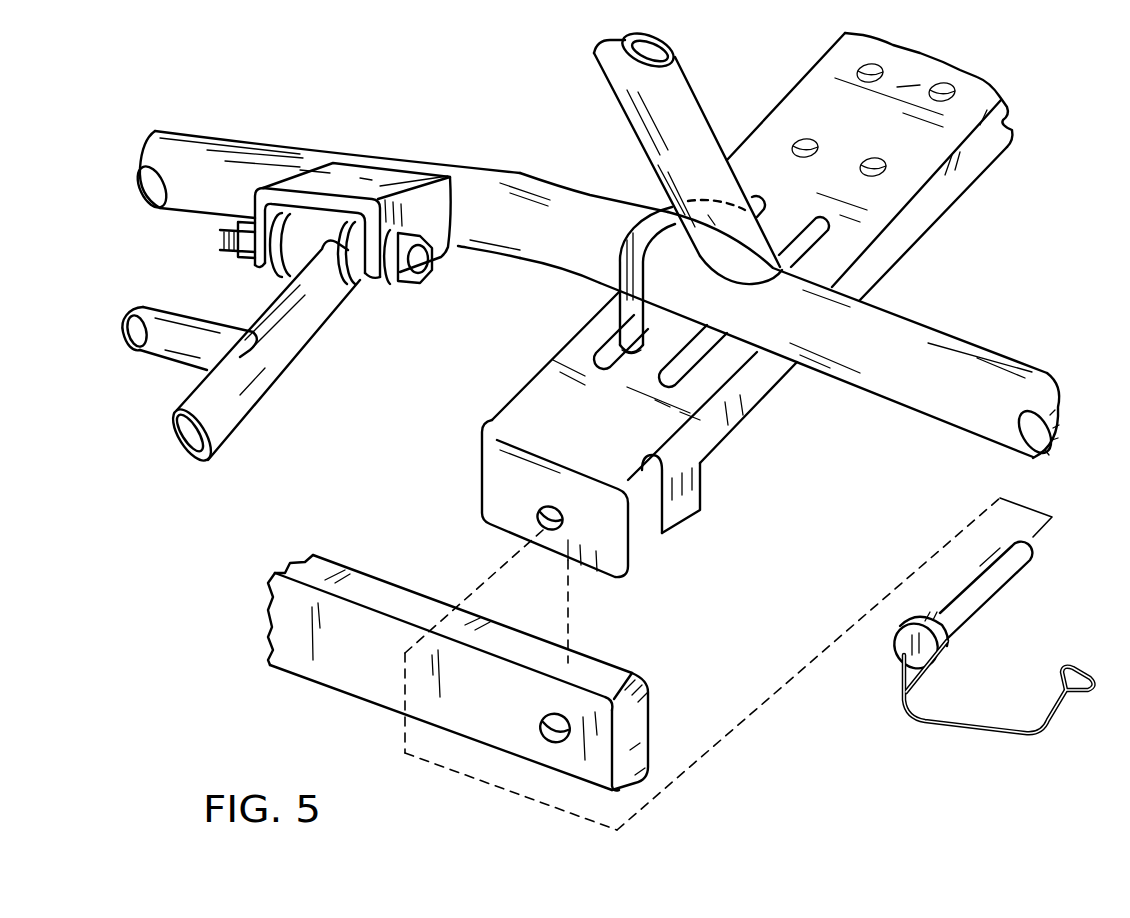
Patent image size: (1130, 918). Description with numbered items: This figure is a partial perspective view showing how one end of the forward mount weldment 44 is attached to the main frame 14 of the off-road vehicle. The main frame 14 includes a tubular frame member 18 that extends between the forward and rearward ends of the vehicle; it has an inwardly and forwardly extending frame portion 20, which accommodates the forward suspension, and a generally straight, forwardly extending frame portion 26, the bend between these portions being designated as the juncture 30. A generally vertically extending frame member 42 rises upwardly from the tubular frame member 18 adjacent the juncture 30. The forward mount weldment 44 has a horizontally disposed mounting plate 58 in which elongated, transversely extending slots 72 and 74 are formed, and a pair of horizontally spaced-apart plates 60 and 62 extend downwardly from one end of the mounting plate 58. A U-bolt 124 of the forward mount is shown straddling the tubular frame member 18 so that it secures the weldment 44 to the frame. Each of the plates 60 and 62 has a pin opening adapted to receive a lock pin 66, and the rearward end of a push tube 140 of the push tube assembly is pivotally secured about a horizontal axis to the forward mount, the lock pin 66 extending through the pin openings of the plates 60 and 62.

The main frame 14 is at (506, 146).
The tubular frame member 18 is at (958, 328).
The frame portion 20 is at (928, 390).
The frame portion 26 is at (240, 173).
The juncture 30 is at (540, 183).
The vertically extending frame member 42 is at (693, 113).
The forward mount weldment 44 is at (919, 166).
The mounting plate 58 is at (854, 130).
The plate 60 is at (608, 552).
The plate 62 is at (650, 520).
The lock pin 66 is at (970, 597).
The slot 72 is at (629, 385).
The slot 74 is at (557, 340).
The U-bolt 124 is at (618, 306).
The push tube 140 is at (360, 588).